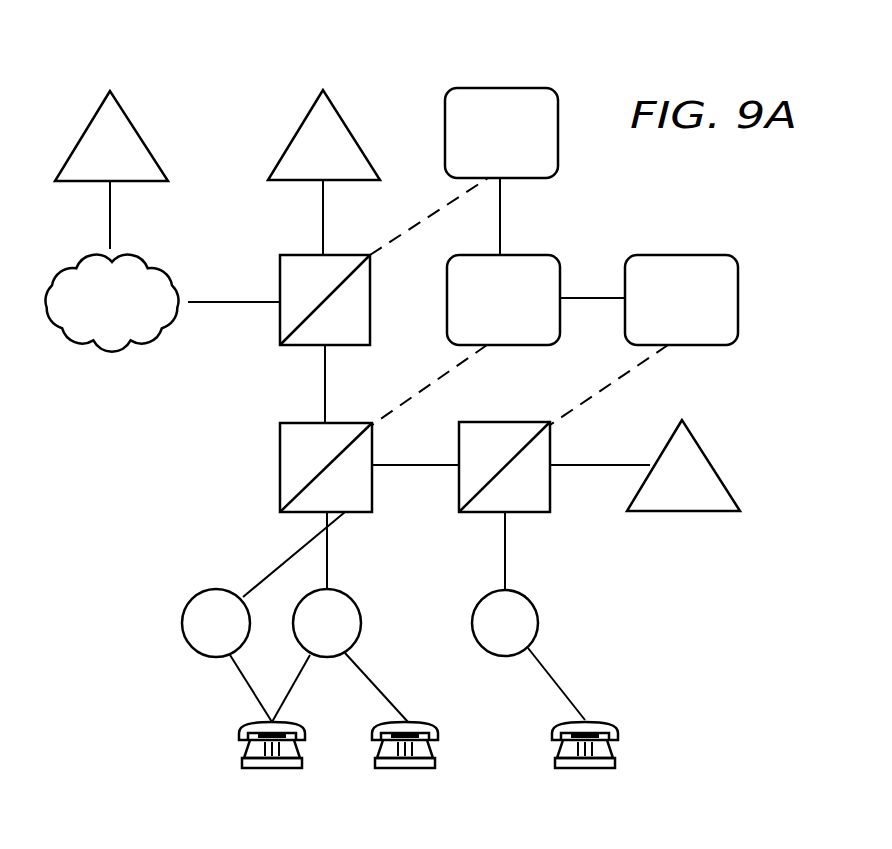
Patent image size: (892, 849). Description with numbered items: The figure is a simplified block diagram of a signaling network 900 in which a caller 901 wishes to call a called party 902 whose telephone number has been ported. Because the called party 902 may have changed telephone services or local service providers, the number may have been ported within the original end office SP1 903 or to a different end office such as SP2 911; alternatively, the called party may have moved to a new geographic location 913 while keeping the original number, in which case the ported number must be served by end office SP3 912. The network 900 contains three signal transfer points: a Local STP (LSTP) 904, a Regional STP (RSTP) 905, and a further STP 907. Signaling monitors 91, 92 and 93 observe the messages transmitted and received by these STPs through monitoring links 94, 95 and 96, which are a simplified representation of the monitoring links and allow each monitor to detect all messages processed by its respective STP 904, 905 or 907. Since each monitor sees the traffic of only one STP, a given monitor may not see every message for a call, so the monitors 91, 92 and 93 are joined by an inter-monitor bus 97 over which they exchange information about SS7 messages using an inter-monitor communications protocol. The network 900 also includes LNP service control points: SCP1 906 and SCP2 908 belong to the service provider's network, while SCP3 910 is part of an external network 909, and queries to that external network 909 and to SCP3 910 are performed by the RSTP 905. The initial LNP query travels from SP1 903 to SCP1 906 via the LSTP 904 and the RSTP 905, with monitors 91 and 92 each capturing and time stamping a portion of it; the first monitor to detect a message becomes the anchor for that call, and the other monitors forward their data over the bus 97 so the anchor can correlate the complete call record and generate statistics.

The network 900 is at (178, 60).
The SCP3 910 is at (80, 131).
The SCP1 906 is at (298, 131).
The external network 909 is at (108, 357).
The Regional STP (RSTP) 905 is at (345, 347).
The monitor 92 is at (503, 88).
The inter-monitor bus 97 is at (505, 218).
The monitoring link 95 is at (440, 218).
The monitor 91 is at (527, 347).
The monitor 93 is at (680, 253).
The monitoring link 94 is at (440, 383).
The monitoring link 96 is at (620, 385).
The Local STP (LSTP) 904 is at (280, 470).
The STP 907 is at (523, 514).
The SCP2 908 is at (738, 452).
The SP2 911 is at (183, 625).
The SP1 903 is at (362, 625).
The SP3 912 is at (538, 620).
The called party 902 is at (240, 735).
The caller 901 is at (418, 722).
The new geographic location 913 is at (595, 722).